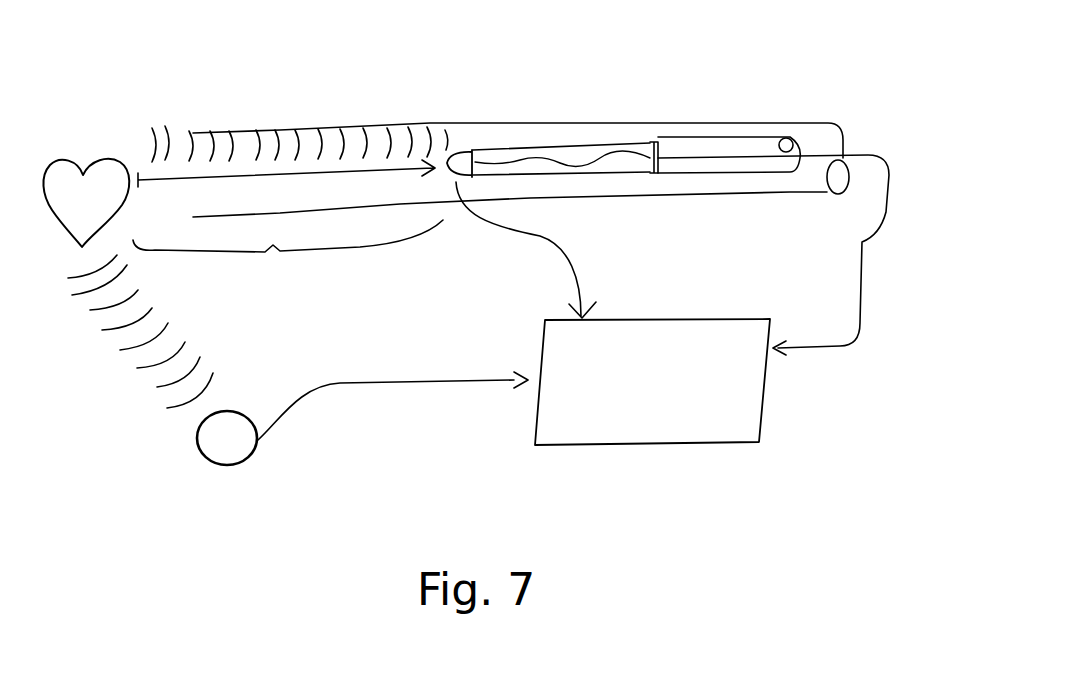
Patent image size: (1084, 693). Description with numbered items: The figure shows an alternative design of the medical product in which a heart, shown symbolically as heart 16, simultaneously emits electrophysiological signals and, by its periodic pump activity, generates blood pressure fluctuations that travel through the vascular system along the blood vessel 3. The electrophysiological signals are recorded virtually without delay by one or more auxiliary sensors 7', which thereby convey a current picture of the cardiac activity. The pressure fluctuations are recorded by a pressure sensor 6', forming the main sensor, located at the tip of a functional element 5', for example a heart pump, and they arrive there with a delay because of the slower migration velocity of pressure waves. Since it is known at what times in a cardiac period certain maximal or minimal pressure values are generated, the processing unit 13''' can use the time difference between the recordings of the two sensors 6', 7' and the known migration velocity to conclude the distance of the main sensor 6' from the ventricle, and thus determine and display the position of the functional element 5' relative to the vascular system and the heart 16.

The heart 16 is at (90, 148).
The blood vessel 3 is at (432, 122).
The functional element 5' is at (681, 209).
The pressure sensor 6' is at (521, 191).
The auxiliary sensor 7' is at (362, 442).
The processing unit 13''' is at (652, 416).